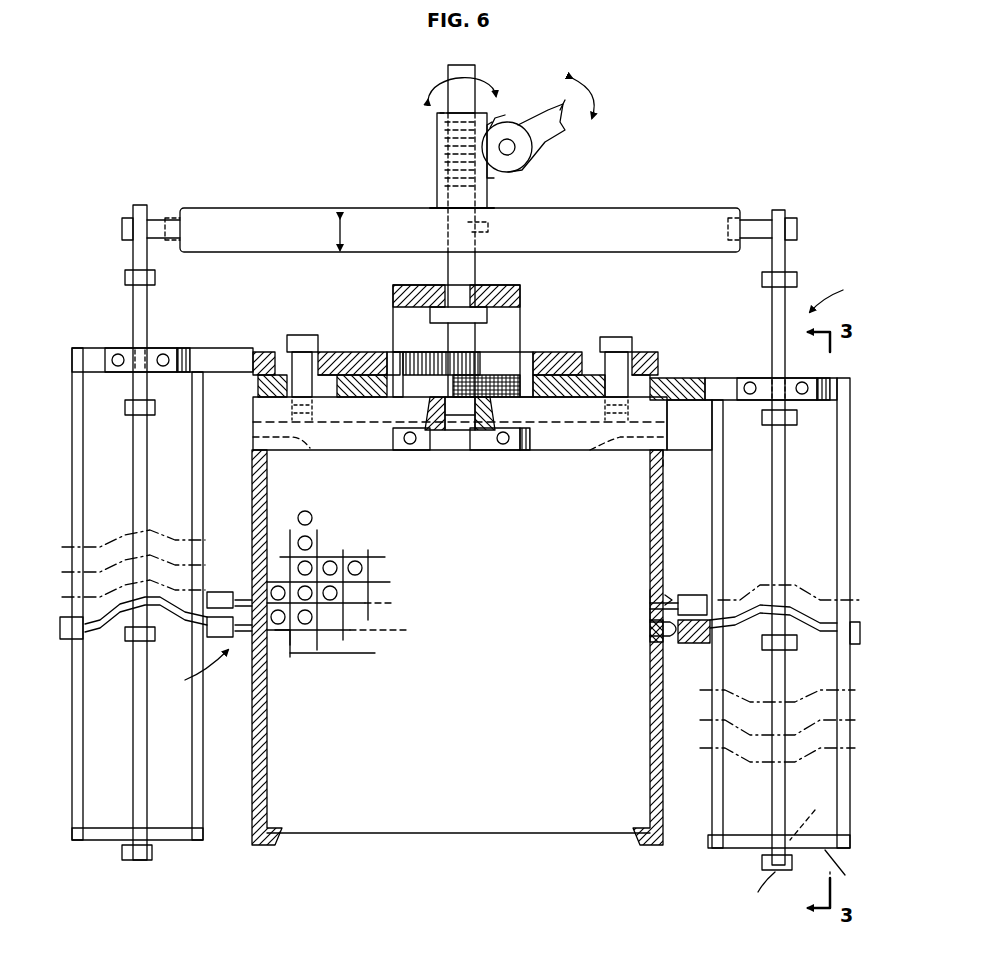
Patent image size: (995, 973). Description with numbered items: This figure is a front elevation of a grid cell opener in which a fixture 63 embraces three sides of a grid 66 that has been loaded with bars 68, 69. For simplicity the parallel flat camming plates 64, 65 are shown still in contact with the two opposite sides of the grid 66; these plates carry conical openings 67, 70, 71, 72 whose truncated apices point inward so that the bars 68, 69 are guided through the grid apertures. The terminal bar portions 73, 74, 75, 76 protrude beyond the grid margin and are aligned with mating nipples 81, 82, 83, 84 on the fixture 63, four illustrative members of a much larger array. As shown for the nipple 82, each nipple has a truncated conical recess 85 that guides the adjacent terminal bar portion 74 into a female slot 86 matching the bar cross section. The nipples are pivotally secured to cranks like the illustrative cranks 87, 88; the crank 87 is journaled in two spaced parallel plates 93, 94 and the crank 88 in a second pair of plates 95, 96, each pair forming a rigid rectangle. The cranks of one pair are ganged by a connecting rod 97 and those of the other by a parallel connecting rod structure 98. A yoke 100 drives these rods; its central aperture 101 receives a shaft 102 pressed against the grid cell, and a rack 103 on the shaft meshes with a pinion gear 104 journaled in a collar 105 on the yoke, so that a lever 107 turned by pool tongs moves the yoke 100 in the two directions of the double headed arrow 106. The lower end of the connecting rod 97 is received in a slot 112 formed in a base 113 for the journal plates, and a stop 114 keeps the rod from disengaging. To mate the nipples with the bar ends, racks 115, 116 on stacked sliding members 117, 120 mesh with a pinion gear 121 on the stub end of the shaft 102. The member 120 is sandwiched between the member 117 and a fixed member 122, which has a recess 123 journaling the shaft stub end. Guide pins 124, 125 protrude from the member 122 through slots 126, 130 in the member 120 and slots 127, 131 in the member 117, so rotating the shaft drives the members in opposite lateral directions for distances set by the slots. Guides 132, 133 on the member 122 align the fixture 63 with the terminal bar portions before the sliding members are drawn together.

The fixture 63 is at (839, 292).
The camming plate 64 is at (650, 798).
The camming plate 65 is at (267, 795).
The grid 66 is at (478, 833).
The conical opening 67 is at (655, 590).
The bar 68 is at (268, 580).
The bar 69 is at (318, 630).
The conical opening 70 is at (650, 632).
The conical opening 71 is at (284, 645).
The conical opening 72 is at (243, 635).
The terminal bar portion 73 is at (672, 598).
The terminal bar portion 74 is at (650, 605).
The terminal bar portion 75 is at (243, 598).
The terminal bar portion 76 is at (189, 672).
The nipple 81 is at (692, 600).
The nipple 82 is at (693, 643).
The nipple 83 is at (212, 598).
The nipple 84 is at (200, 628).
The truncated conical recess 85 is at (660, 640).
The female slot 86 is at (712, 640).
The crank 87 is at (818, 632).
The crank 88 is at (97, 628).
The journal plate 93 is at (723, 483).
The journal plate 94 is at (850, 535).
The journal plate 95 is at (203, 490).
The journal plate 96 is at (72, 455).
The connecting rod 97 is at (785, 500).
The connecting rod structure 98 is at (140, 470).
The yoke 100 is at (603, 208).
The central aperture 101 is at (490, 218).
The shaft 102 is at (478, 268).
The rack 103 is at (437, 125).
The pinion gear 104 is at (505, 118).
The collar 105 is at (437, 152).
The double headed arrow 106 is at (355, 255).
The lever 107 is at (560, 135).
The slot 112 is at (808, 815).
The base 113 is at (854, 871).
The stop 114 is at (753, 887).
The rack 115 is at (436, 352).
The rack 116 is at (500, 400).
The sliding member 117 is at (352, 352).
The sliding member 120 is at (692, 405).
The pinion gear 121 is at (476, 323).
The fixed member 122 is at (600, 452).
The recess 123 is at (457, 430).
The guide pin 124 is at (620, 345).
The guide pin 125 is at (300, 352).
The slot 126 is at (655, 365).
The slot 127 is at (590, 352).
The slot 130 is at (337, 385).
The slot 131 is at (272, 352).
The guide 132 is at (667, 455).
The guide 133 is at (265, 455).